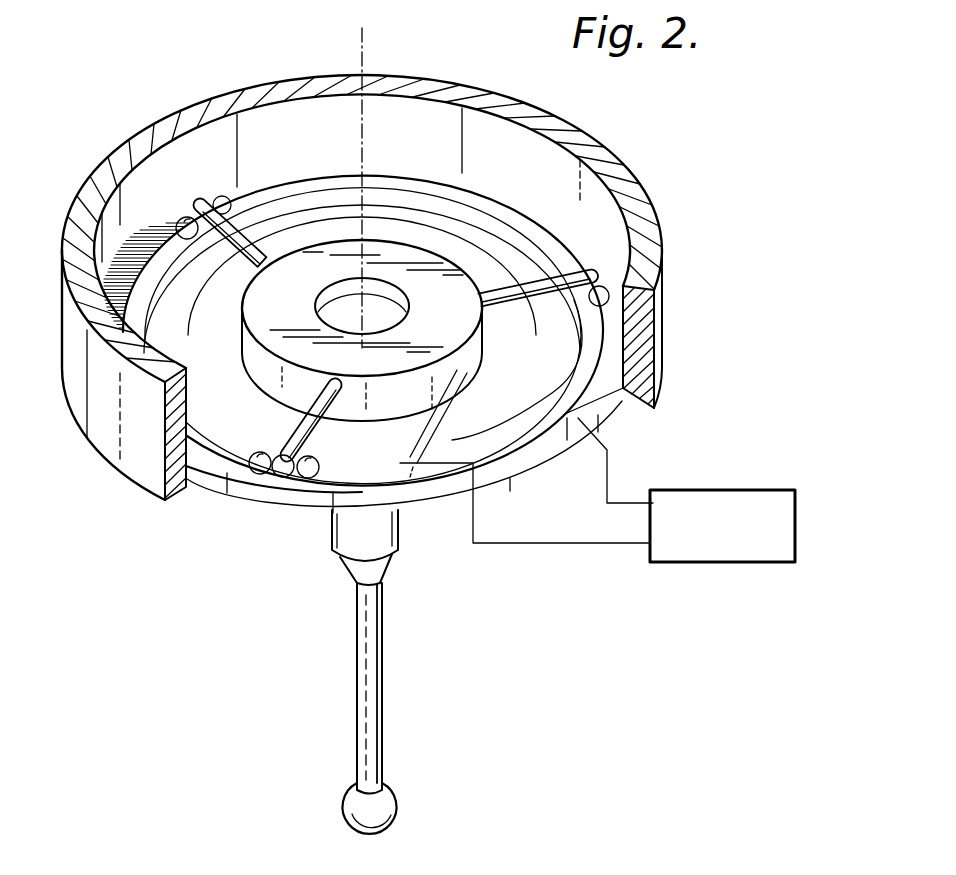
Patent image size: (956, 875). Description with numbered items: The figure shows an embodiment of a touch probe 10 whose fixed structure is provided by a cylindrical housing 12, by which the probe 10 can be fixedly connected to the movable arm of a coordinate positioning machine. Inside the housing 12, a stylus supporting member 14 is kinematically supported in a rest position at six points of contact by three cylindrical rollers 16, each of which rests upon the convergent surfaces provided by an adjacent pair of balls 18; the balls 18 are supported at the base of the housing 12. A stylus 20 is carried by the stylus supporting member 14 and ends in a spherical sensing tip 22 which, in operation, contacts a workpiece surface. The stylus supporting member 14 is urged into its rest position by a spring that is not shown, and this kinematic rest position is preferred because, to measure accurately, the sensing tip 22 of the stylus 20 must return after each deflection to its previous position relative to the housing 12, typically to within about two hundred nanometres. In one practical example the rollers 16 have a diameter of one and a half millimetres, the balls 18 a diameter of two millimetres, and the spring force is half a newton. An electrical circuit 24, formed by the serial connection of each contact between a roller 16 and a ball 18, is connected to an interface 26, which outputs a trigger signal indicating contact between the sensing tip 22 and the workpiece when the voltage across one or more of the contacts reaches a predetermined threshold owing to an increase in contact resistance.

The probe 10 is at (422, 294).
The cylindrical housing 12 is at (583, 145).
The stylus supporting member 14 is at (453, 373).
The cylindrical rollers 16 is at (501, 296).
The balls 18 is at (183, 222).
The stylus 20 is at (382, 683).
The spherical sensing tip 22 is at (383, 807).
The electrical circuit 24 is at (583, 543).
The interface 26 is at (747, 487).